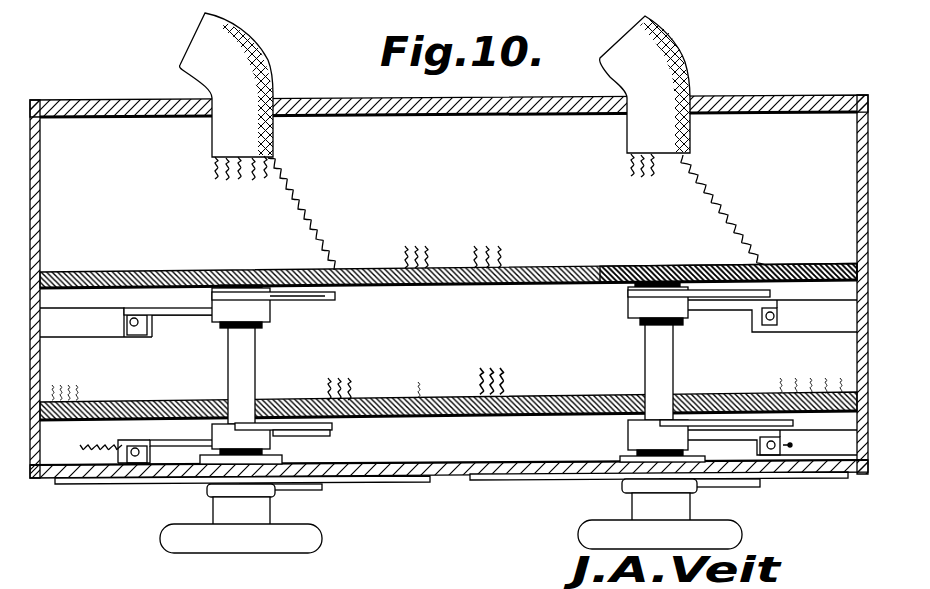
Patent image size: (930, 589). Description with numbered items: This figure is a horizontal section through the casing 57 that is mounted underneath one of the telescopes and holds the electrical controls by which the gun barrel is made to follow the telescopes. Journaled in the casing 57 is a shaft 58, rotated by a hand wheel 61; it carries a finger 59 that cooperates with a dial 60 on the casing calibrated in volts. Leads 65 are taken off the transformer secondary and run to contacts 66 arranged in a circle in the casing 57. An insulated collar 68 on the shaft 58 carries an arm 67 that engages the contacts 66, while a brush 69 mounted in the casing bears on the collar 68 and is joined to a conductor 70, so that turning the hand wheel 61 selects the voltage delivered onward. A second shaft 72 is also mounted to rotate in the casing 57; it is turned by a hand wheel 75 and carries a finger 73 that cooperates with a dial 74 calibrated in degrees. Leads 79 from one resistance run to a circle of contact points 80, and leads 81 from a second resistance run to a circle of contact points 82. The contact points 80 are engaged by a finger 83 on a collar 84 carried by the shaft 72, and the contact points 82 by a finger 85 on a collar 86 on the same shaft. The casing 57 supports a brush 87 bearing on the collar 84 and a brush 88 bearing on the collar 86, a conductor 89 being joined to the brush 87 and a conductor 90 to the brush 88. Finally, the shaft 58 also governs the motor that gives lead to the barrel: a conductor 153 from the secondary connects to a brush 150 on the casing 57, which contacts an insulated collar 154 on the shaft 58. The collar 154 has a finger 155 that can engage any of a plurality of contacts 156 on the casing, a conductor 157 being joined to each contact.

The casing 57 is at (826, 96).
The shaft 58 is at (252, 351).
The finger 59 is at (281, 493).
The dial 60 is at (138, 485).
The hand wheel 61 is at (256, 544).
The leads 65 is at (222, 175).
The contacts 66 is at (346, 272).
The arm 67 is at (321, 301).
The insulated collar 68 is at (213, 326).
The brush 69 is at (163, 305).
The conductor 70 is at (84, 372).
The shaft 72 is at (645, 358).
The finger 73 is at (760, 482).
The dial 74 is at (830, 481).
The hand wheel 75 is at (578, 530).
The leads 79 is at (625, 171).
The contact points 80 is at (781, 265).
The leads 81 is at (498, 384).
The contact points 82 is at (486, 418).
The finger 83 is at (735, 298).
The collar 84 is at (628, 302).
The finger 85 is at (700, 430).
The collar 86 is at (628, 438).
The brush 87 is at (711, 312).
The brush 88 is at (737, 438).
The conductor 89 is at (778, 327).
The conductor 90 is at (792, 445).
The brush 150 is at (164, 440).
The conductor 153 is at (75, 448).
The insulated collar 154 is at (210, 424).
The finger 155 is at (304, 437).
The contacts 156 is at (336, 426).
The conductor 157 is at (350, 398).